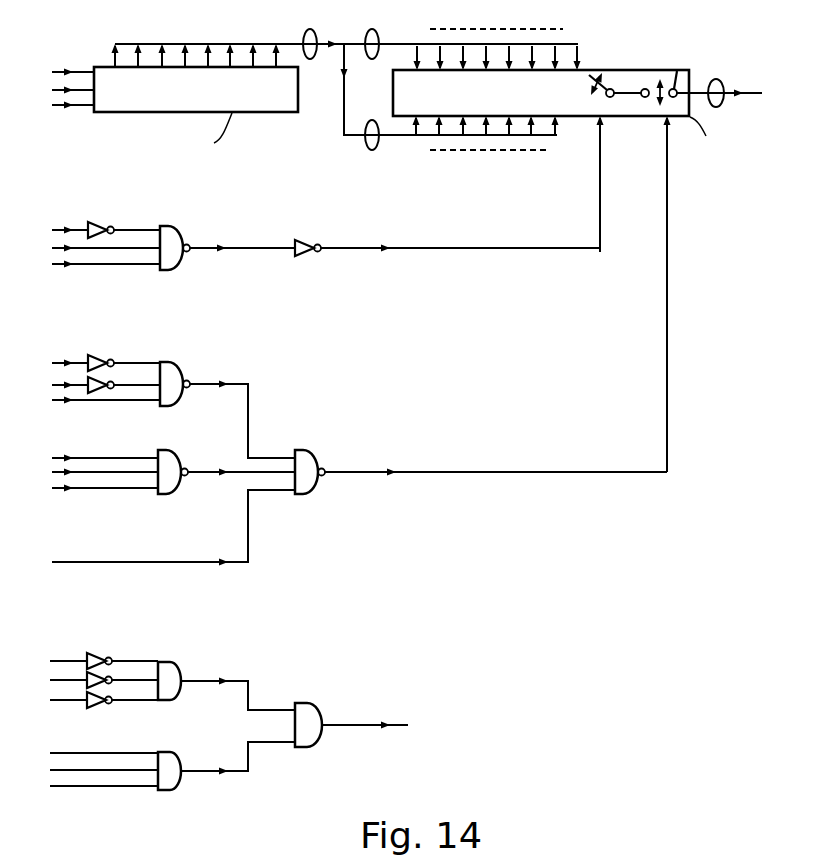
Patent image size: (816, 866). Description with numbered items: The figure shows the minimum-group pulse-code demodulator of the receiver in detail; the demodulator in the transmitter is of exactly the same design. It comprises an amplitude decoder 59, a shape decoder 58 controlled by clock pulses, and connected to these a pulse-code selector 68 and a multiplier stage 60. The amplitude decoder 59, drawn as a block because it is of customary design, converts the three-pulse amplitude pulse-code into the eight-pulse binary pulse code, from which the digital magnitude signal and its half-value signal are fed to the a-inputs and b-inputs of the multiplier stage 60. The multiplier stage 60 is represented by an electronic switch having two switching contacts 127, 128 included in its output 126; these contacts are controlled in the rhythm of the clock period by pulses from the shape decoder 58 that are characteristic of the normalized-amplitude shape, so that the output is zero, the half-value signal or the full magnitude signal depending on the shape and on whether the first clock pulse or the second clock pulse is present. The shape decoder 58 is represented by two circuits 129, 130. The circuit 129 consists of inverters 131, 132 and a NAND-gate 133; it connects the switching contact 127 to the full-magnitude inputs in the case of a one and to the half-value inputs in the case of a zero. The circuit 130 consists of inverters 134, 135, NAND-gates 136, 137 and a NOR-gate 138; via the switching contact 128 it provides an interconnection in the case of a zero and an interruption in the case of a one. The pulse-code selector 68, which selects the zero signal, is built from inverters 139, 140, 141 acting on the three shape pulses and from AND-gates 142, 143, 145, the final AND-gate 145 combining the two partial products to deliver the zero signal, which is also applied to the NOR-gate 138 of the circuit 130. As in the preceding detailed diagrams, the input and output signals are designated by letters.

The amplitude decoder 59 is at (98, 66).
The multiplier stage 60 is at (393, 91).
The output 126 is at (735, 88).
The switching contact 127 is at (599, 72).
The switching contact 128 is at (677, 70).
The circuit 129 is at (234, 210).
The circuit 130 is at (219, 435).
The inverter 131 is at (99, 223).
The inverter 132 is at (302, 238).
The NAND-gate 133 is at (177, 270).
The inverter 134 is at (100, 356).
The inverter 135 is at (98, 394).
The NAND-gate 136 is at (178, 362).
The NAND-gate 137 is at (175, 495).
The NOR-gate 138 is at (316, 494).
The shape decoder 58 is at (352, 340).
The pulse-code selector 68 is at (334, 630).
The inverter 139 is at (108, 657).
The inverter 140 is at (86, 679).
The inverter 141 is at (96, 706).
The AND-gate 142 is at (180, 676).
The AND-gate 143 is at (172, 793).
The AND-gate 145 is at (320, 710).